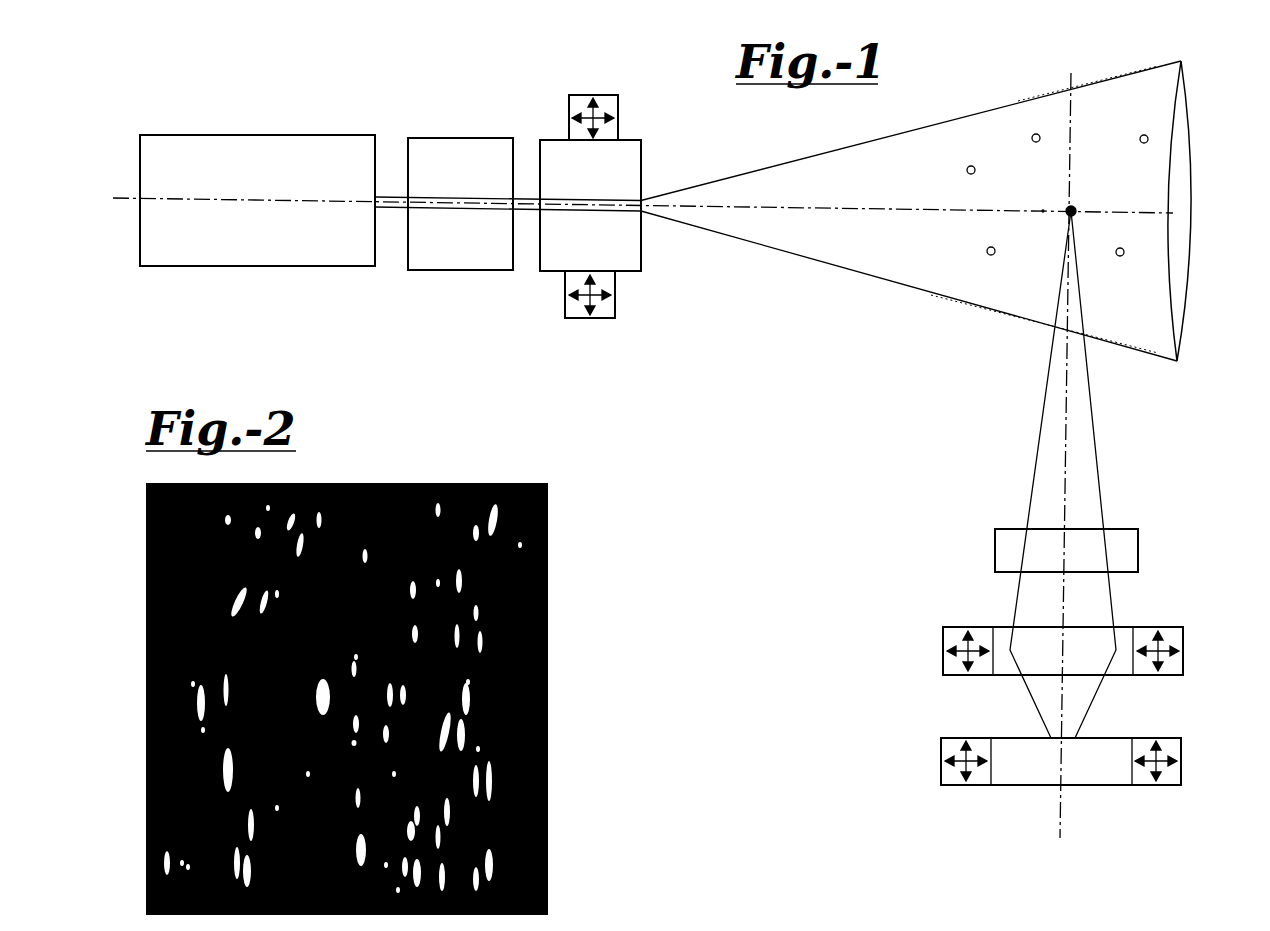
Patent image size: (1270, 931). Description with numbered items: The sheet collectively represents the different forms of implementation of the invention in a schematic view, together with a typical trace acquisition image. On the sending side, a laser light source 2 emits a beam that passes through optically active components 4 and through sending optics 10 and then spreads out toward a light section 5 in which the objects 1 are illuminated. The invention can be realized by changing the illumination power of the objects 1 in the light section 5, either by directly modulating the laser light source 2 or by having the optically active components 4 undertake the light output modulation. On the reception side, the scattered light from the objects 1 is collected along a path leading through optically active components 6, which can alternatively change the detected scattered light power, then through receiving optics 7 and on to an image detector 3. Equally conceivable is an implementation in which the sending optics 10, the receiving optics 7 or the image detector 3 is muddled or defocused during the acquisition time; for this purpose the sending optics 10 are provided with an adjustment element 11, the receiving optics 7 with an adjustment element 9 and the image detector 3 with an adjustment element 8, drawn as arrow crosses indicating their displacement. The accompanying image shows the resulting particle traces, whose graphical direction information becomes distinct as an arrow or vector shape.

The objects 1 is at (1068, 200).
The laser light source 2 is at (197, 126).
The image detector 3 is at (995, 728).
The optically active components 4 is at (418, 128).
The light section 5 is at (1035, 203).
The optically active components 6 is at (1132, 540).
The receiving optics 7 is at (995, 617).
The adjustment element 8 is at (1175, 743).
The adjustment element 9 is at (1177, 632).
The sending optics 10 is at (543, 130).
The adjustment element 11 is at (610, 90).